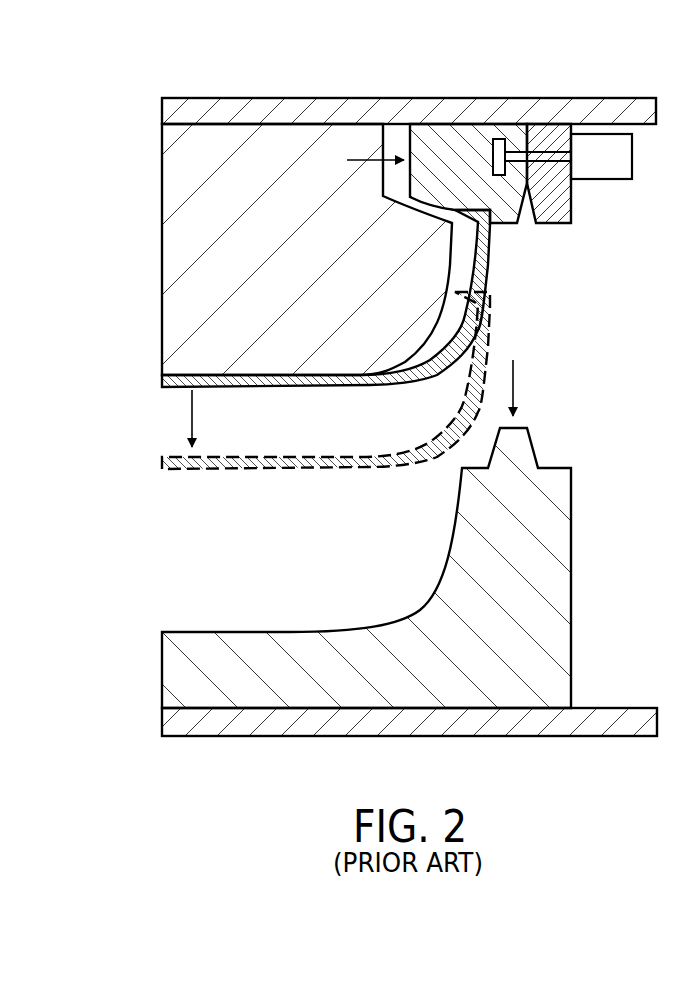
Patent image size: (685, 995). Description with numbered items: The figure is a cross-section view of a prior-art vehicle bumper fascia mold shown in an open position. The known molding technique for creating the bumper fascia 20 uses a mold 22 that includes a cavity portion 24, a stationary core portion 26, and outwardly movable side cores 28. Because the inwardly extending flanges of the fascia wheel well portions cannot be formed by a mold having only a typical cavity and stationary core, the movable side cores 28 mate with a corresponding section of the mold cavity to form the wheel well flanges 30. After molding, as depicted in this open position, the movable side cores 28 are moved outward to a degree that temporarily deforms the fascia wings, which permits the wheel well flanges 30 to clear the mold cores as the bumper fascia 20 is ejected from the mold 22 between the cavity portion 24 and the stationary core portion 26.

The bumper fascia 20 is at (168, 388).
The mold 22 is at (80, 150).
The cavity portion 24 is at (552, 588).
The stationary core portion 26 is at (193, 248).
The movable side cores 28 is at (480, 137).
The wheel well flanges 30 is at (470, 200).